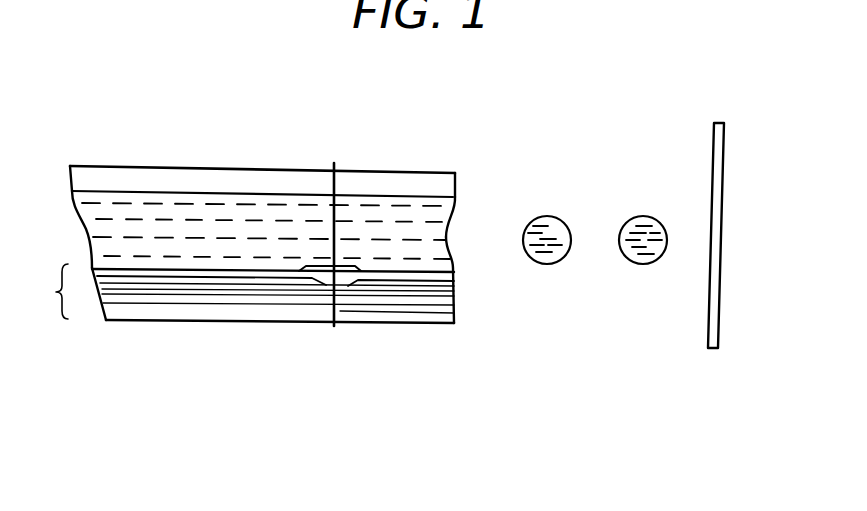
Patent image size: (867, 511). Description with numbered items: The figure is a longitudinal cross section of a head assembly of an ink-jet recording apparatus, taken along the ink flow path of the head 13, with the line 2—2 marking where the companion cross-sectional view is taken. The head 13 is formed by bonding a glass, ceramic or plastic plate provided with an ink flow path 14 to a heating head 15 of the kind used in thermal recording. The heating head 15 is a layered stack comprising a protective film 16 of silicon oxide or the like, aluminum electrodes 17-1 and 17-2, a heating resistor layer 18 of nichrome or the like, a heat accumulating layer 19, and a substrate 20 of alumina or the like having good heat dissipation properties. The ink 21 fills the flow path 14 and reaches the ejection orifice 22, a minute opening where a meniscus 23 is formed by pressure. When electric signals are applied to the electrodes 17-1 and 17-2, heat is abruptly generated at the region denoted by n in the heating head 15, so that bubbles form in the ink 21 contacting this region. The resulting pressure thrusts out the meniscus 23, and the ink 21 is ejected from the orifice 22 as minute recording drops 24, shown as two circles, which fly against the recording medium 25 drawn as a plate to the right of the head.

The section line 2— 2 is at (334, 163).
The head 13 is at (195, 166).
The ink flow path 14 is at (250, 191).
The heating head 15 is at (66, 292).
The protective film 16 is at (127, 272).
The aluminum electrode 17-1 is at (178, 284).
The aluminum electrode 17-2 is at (427, 287).
The heating resistor layer 18 is at (253, 290).
The heat accumulating layer 19 is at (297, 297).
The substrate 20 is at (380, 315).
The ink 21 is at (108, 199).
The ejection orifice 22 is at (455, 257).
The meniscus 23 is at (447, 238).
The recording drops 24 is at (670, 212).
The recording medium 25 is at (712, 185).
The heat generating region n is at (322, 263).